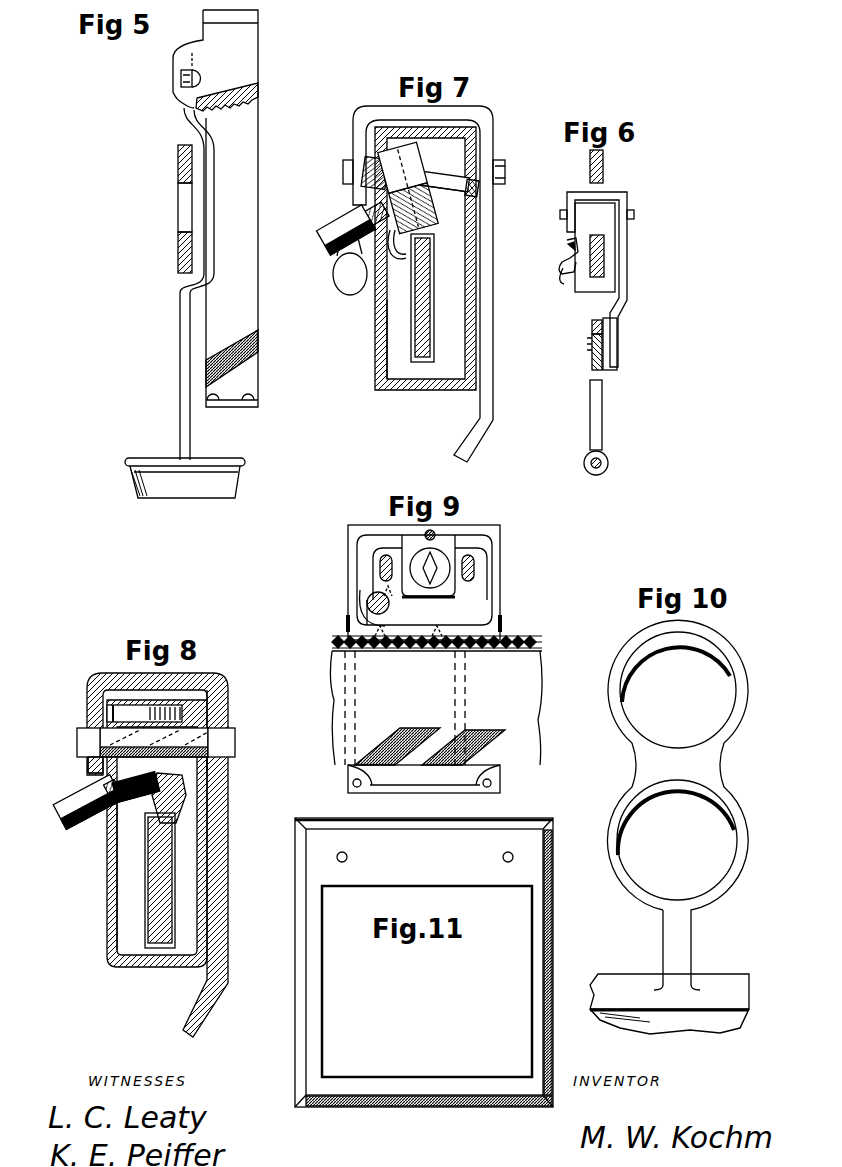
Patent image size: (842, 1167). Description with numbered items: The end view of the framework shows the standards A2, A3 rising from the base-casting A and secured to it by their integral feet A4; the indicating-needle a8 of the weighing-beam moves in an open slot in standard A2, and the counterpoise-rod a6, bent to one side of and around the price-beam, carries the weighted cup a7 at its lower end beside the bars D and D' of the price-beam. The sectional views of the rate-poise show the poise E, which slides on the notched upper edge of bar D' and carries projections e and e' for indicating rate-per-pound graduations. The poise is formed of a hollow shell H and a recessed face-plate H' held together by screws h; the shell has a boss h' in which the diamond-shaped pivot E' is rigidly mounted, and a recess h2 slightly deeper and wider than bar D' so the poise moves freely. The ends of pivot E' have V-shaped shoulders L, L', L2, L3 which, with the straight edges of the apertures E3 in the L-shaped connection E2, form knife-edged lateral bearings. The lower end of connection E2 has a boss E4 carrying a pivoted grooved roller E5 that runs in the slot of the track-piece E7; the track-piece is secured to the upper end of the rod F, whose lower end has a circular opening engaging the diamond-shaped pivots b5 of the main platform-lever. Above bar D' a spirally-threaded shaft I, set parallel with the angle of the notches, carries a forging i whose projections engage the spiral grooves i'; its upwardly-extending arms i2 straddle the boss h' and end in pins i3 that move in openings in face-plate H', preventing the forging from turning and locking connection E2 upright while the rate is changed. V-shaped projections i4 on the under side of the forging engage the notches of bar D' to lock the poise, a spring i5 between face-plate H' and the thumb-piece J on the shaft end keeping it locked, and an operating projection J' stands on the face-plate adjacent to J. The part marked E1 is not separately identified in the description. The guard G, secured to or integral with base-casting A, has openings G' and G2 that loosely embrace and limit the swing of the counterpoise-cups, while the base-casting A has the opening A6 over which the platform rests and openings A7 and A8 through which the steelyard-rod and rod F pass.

In FIG. 10, the base-casting A is at (669, 1004).
In FIG. 11, the base-casting A is at (424, 962).
In FIG. 5, the standard A2 is at (215, 208).
In FIG. 5, the standard A3 is at (227, 117).
In FIG. 5, the integral feet A4 is at (258, 405).
In FIG. 11, the opening A6 is at (323, 1036).
In FIG. 11, the opening A7 is at (347, 856).
In FIG. 11, the opening A8 is at (503, 856).
In FIG. 5, the counterpoise-rod a6 is at (215, 198).
In FIG. 5, the weighted cup a7 is at (185, 478).
In FIG. 5, the indicating-needle a8 is at (181, 80).
In FIG. 5, the bar of price-beam D is at (164, 188).
In FIG. 6, the bar of price-beam D is at (614, 166).
In FIG. 5, the bar of price-beam D' is at (165, 251).
In FIG. 7, the bar of price-beam D' is at (439, 297).
In FIG. 6, the bar of price-beam D' is at (633, 251).
In FIG. 9, the bar of price-beam D' is at (436, 708).
In FIG. 8, the bar of price-beam D' is at (171, 880).
In FIG. 6, the poise E is at (634, 246).
In FIG. 7, the diamond-shaped pivot E' is at (438, 163).
In FIG. 6, the diamond-shaped pivot E' is at (613, 206).
In FIG. 9, the diamond-shaped pivot E' is at (403, 534).
In FIG. 8, the bolt E1 is at (236, 738).
In FIG. 7, the L-shaped connection E2 is at (361, 120).
In FIG. 6, the L-shaped connection E2 is at (568, 201).
In FIG. 8, the L-shaped connection E2 is at (96, 690).
In FIG. 8, the apertures E3 is at (77, 740).
In FIG. 6, the boss E4 is at (610, 353).
In FIG. 6, the grooved roller E5 is at (603, 342).
In FIG. 6, the track-piece E7 is at (604, 327).
In FIG. 6, the rod F is at (598, 392).
In FIG. 6, the diamond-shaped pivots b5 is at (601, 462).
In FIG. 10, the guard G is at (672, 805).
In FIG. 10, the opening G' is at (678, 690).
In FIG. 10, the opening G2 is at (677, 840).
In FIG. 7, the hollow shell H is at (425, 258).
In FIG. 8, the hollow shell H is at (157, 833).
In FIG. 7, the recessed plate H' is at (396, 339).
In FIG. 8, the recessed plate H' is at (129, 875).
In FIG. 9, the screws h is at (420, 635).
In FIG. 8, the screws h is at (139, 683).
In FIG. 9, the boss h' is at (462, 534).
In FIG. 8, the boss h' is at (79, 775).
In FIG. 7, the recess h2 is at (435, 357).
In FIG. 9, the recess h2 is at (500, 636).
In FIG. 8, the recess h2 is at (172, 920).
In FIG. 7, the spirally-threaded shaft I is at (425, 206).
In FIG. 9, the spirally-threaded shaft I is at (333, 610).
In FIG. 8, the spirally-threaded shaft I is at (138, 802).
In FIG. 7, the forging i is at (426, 178).
In FIG. 9, the forging i is at (383, 608).
In FIG. 7, the spiral grooves i' is at (463, 170).
In FIG. 8, the spiral grooves i' is at (136, 795).
In FIG. 7, the upwardly-extending arms i2 is at (408, 186).
In FIG. 9, the upwardly-extending arms i2 is at (375, 558).
In FIG. 7, the pins or bearings i3 is at (366, 165).
In FIG. 9, the pins or bearings i3 is at (384, 570).
In FIG. 7, the V-shaped projections i4 is at (400, 262).
In FIG. 9, the V-shaped projections i4 is at (380, 652).
In FIG. 8, the V-shaped projections i4 is at (176, 798).
In FIG. 7, the spring i5 is at (372, 249).
In FIG. 8, the spring i5 is at (108, 806).
In FIG. 7, the handle or thumb-piece J is at (345, 250).
In FIG. 6, the handle or thumb-piece J is at (557, 256).
In FIG. 8, the handle or thumb-piece J is at (88, 814).
In FIG. 6, the operating projection J' is at (557, 294).
In FIG. 8, the V-shaped shoulder L is at (231, 692).
In FIG. 8, the V-shaped shoulder L' is at (230, 773).
In FIG. 9, the V-shaped shoulder L2 is at (440, 580).
In FIG. 8, the V-shaped shoulder L2 is at (88, 765).
In FIG. 9, the V-shaped shoulder L3 is at (440, 560).
In FIG. 8, the V-shaped shoulder L3 is at (90, 757).
In FIG. 9, the projection e is at (461, 769).
In FIG. 9, the projection e' is at (454, 649).